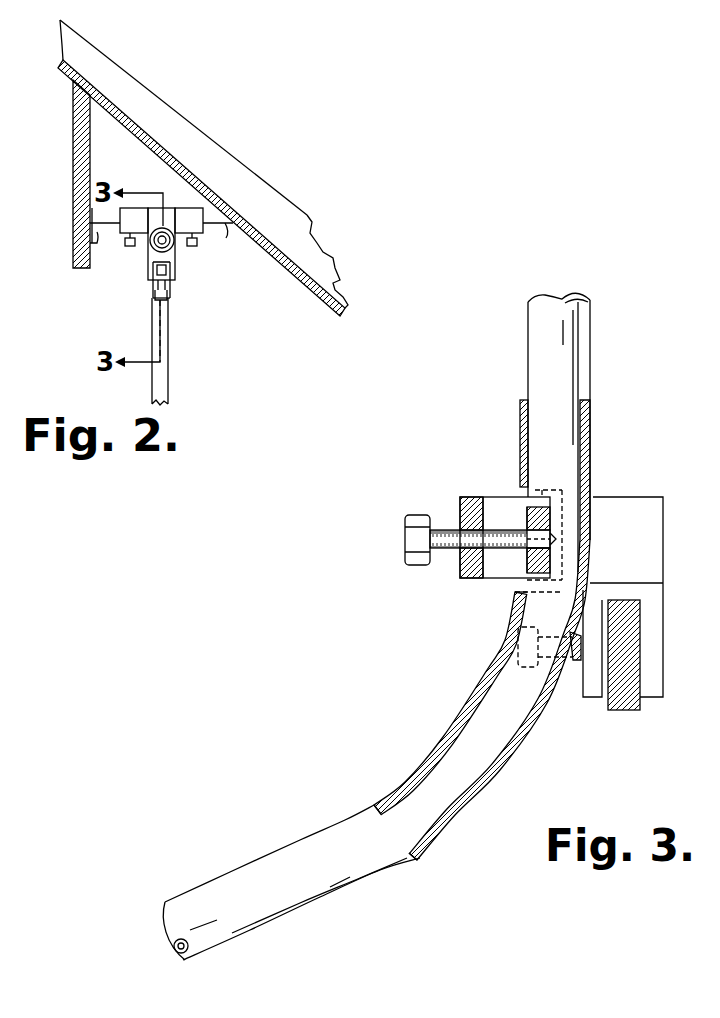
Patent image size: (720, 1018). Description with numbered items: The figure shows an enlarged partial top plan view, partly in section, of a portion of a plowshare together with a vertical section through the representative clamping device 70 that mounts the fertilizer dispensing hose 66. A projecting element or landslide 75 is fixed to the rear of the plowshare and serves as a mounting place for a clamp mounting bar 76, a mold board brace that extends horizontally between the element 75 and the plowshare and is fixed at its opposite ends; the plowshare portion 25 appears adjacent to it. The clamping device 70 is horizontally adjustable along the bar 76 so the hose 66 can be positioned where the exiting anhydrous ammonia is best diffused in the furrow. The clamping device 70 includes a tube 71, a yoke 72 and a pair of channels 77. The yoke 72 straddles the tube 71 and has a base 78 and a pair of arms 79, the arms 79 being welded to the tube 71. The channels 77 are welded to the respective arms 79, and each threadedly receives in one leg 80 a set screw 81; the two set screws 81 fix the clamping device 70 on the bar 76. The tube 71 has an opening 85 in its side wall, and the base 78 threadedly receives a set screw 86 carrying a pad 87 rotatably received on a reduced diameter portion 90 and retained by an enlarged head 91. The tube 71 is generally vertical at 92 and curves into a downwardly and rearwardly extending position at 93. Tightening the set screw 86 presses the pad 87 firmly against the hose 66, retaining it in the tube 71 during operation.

In FIG. 2, the deck plate 25 is at (187, 140).
In FIG. 2, the hose 66 is at (163, 382).
In FIG. 3, the hose 66 is at (345, 847).
In FIG. 2, the clamping device 70 is at (192, 280).
In FIG. 2, the tube 71 is at (172, 283).
In FIG. 3, the tube 71 is at (516, 758).
In FIG. 2, the yoke 72 is at (134, 270).
In FIG. 2, the projecting element or landslide 75 is at (73, 128).
In FIG. 2, the clamp mounting bar 76 is at (90, 212).
In FIG. 3, the clamp mounting bar 76 is at (630, 638).
In FIG. 2, the channel 77 is at (193, 213).
In FIG. 2, the base 78 is at (145, 277).
In FIG. 3, the base 78 is at (470, 497).
In FIG. 2, the arm 79 is at (140, 255).
In FIG. 3, the leg 80 is at (592, 690).
In FIG. 2, the set screw 81 is at (132, 243).
In FIG. 3, the set screw 81 is at (575, 657).
In FIG. 3, the opening 85 is at (520, 492).
In FIG. 3, the set screw 86 is at (440, 512).
In FIG. 3, the pad 87 is at (507, 510).
In FIG. 3, the reduced diameter portion 90 is at (537, 548).
In FIG. 3, the enlarged head 91 is at (548, 537).
In FIG. 3, the generally vertical portion 92 is at (595, 428).
In FIG. 3, the downwardly and rearwardly extending portion 93 is at (440, 843).